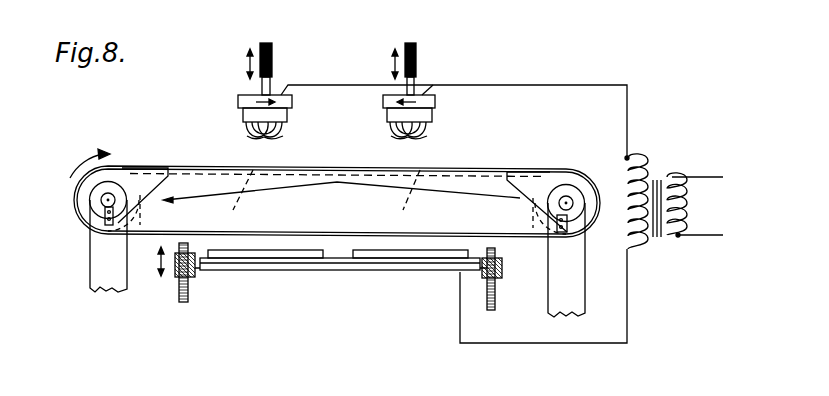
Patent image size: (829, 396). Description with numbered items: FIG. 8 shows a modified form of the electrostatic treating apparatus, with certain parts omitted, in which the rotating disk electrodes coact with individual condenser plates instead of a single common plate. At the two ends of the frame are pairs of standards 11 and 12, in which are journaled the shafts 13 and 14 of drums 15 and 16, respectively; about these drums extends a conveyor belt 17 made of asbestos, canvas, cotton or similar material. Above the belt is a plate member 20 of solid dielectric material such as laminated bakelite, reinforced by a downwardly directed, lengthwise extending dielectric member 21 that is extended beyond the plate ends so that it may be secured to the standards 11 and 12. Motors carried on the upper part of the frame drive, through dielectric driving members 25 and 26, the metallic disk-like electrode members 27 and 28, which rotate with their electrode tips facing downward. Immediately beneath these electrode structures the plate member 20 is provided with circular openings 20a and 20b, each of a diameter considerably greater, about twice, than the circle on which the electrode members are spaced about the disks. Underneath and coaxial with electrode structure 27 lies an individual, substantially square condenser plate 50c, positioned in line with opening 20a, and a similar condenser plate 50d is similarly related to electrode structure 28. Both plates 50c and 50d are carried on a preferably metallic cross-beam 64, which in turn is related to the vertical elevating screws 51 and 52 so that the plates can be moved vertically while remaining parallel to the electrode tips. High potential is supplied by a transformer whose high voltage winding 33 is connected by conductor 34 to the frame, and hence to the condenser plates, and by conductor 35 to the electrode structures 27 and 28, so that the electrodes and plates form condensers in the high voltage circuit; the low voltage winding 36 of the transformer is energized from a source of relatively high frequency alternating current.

The standards 11 is at (98, 267).
The standards 12 is at (572, 285).
The shaft 13 is at (106, 206).
The shaft 14 is at (566, 200).
The drum 15 is at (88, 194).
The drum 16 is at (586, 199).
The conveyor belt 17 is at (178, 165).
The plate member 20 is at (302, 186).
The circular opening 20a is at (239, 198).
The circular opening 20b is at (415, 198).
The reinforcing member 21 is at (163, 201).
The driving member 25 is at (273, 61).
The driving member 26 is at (417, 61).
The disk-like electrode member 27 is at (287, 114).
The disk-like electrode member 28 is at (432, 115).
The high voltage winding 33 is at (628, 173).
The conductor 34 is at (568, 343).
The conductor 35 is at (578, 86).
The low voltage winding 36 is at (685, 181).
The condenser plate 50c is at (282, 259).
The condenser plate 50d is at (405, 259).
The elevating screw 51 is at (189, 298).
The elevating screw 52 is at (497, 301).
The cross-beam 64 is at (337, 270).